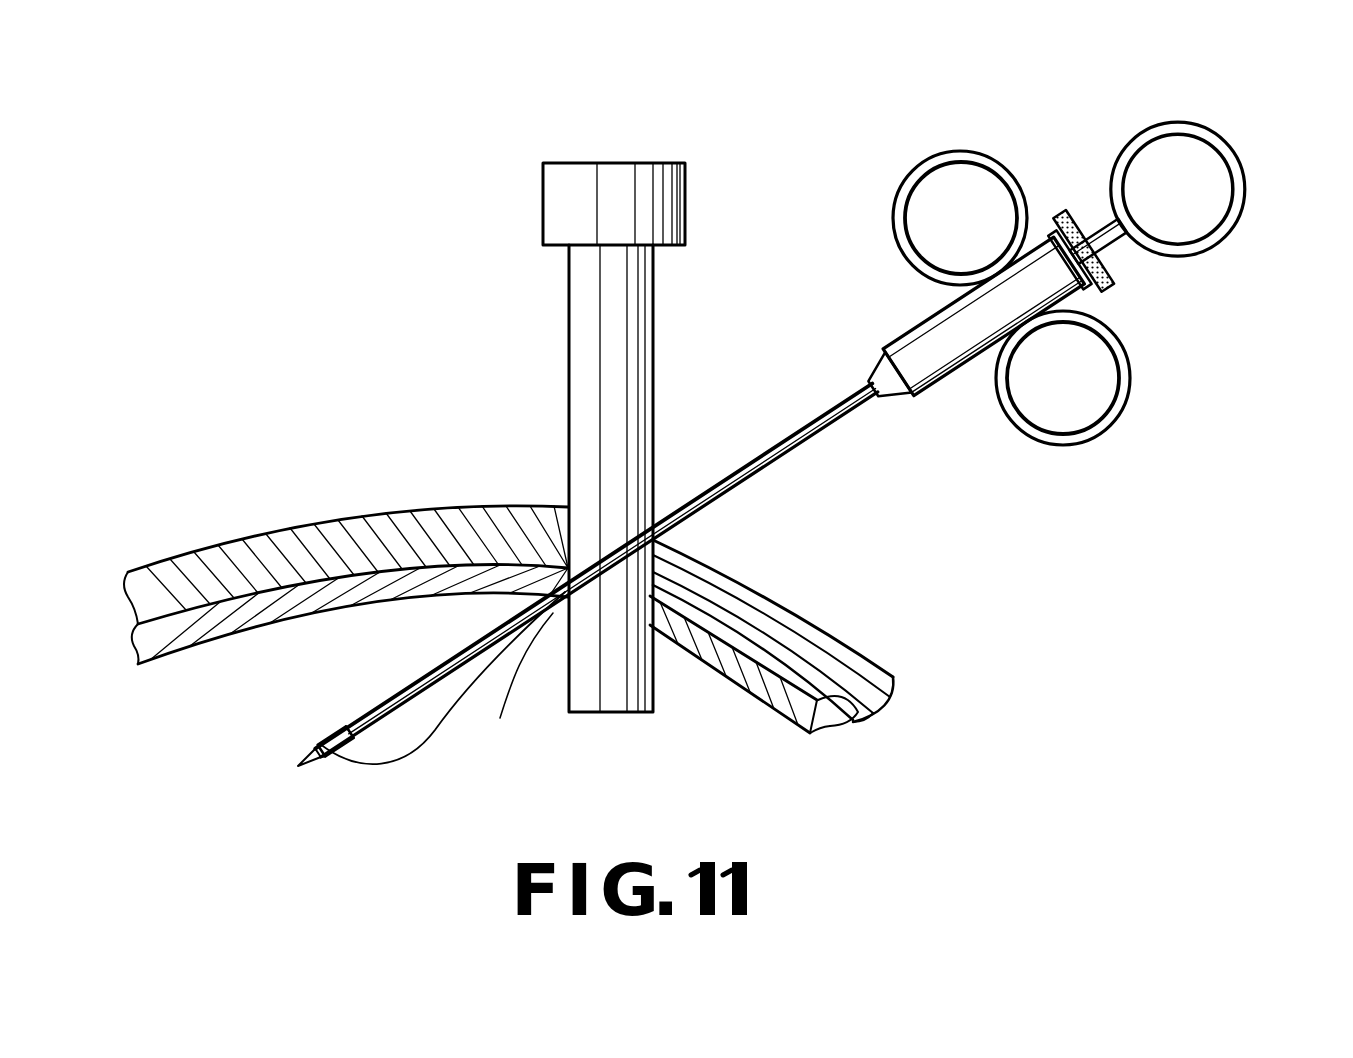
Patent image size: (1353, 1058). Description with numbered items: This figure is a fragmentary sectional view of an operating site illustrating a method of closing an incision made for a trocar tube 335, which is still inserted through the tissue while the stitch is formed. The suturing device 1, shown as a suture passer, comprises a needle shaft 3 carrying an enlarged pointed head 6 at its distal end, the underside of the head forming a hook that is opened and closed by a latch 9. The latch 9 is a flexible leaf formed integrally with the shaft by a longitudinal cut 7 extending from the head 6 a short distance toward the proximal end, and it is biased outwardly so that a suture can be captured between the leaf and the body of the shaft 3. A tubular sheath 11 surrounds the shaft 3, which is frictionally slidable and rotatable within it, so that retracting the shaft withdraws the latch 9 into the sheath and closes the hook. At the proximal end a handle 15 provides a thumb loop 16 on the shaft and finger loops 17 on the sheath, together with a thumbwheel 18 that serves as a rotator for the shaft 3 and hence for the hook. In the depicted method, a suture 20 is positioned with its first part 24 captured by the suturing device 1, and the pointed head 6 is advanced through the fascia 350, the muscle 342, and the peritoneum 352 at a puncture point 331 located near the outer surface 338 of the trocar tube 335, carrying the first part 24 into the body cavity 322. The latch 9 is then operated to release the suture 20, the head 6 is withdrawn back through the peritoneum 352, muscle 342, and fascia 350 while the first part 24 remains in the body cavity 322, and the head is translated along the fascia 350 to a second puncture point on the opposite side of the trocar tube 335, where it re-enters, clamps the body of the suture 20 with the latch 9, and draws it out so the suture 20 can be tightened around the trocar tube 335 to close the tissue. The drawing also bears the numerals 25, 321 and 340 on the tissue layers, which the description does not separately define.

The endoscopic suturing device 1 is at (832, 434).
The needle shaft 3 is at (356, 728).
The pointed head 6 is at (303, 762).
The longitudinal cut 7 is at (326, 750).
The latch 9 is at (322, 728).
The tubular sheath 11 is at (788, 438).
The handle 15 is at (1156, 110).
The thumb loop 16 is at (1250, 190).
The finger loops 17 is at (932, 158).
The thumbwheel 18 is at (1118, 285).
The suture 20 is at (511, 687).
The first part of the suture 24 is at (320, 740).
The fascia layer 25 is at (700, 520).
The tissue layer 321 is at (867, 640).
The body cavity 322 is at (718, 823).
The puncture point 331 is at (567, 512).
The trocar tube 335 is at (552, 294).
The outer surface of trocar tube 338 is at (568, 417).
The peritoneum layer 340 is at (888, 688).
The muscle 342 is at (826, 735).
The fascia 350 is at (833, 718).
The peritoneum 352 is at (722, 690).